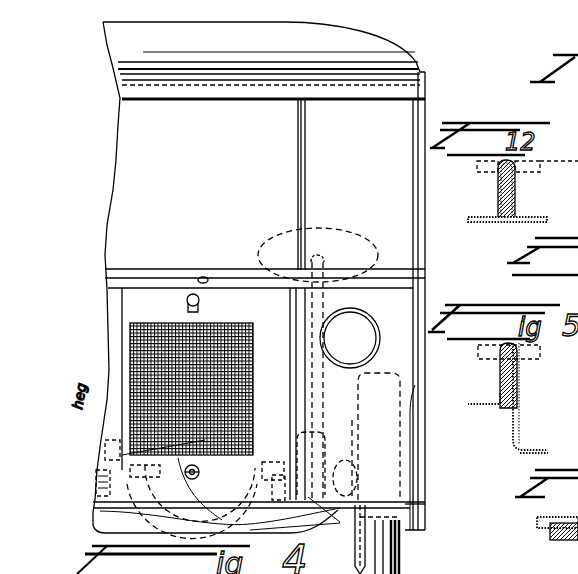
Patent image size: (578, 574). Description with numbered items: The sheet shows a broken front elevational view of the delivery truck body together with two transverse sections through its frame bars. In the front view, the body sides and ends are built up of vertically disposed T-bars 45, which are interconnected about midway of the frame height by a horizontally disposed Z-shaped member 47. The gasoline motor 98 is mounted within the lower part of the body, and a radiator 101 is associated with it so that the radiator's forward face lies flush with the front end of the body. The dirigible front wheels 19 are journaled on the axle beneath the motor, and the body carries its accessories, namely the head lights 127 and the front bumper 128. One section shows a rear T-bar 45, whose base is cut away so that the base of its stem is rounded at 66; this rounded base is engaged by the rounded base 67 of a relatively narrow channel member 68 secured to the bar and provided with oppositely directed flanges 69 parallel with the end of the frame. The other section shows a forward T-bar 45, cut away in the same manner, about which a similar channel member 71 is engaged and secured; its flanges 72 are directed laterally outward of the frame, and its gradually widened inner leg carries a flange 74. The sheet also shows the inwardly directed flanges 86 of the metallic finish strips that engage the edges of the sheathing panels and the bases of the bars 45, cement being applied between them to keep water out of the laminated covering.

In FIG. 4, the Z-shaped member 47 is at (203, 279).
In FIG. 4, the radiator 101 is at (200, 304).
In FIG. 4, the head lights 127 is at (364, 326).
In FIG. 4, the gasoline motor 98 is at (198, 477).
In FIG. 4, the front bumper 128 is at (412, 506).
In FIG. 4, the front wheels 19 is at (385, 556).
In FIG. 12, the T-bars 45 is at (540, 166).
In FIG. 5, the T-bars 45 is at (536, 358).
In FIG. 12, the rounded base of stem portion 66 is at (490, 165).
In FIG. 12, the rounded base of channel member 67 is at (524, 172).
In FIG. 12, the channel member 68 is at (498, 205).
In FIG. 12, the flanges 69 is at (520, 222).
In FIG. 5, the channel member 71 is at (522, 390).
In FIG. 5, the flanges 72 is at (483, 399).
In FIG. 5, the flange 74 is at (535, 452).
In FIG. 5, the inwardly directed flanges 86 is at (565, 541).